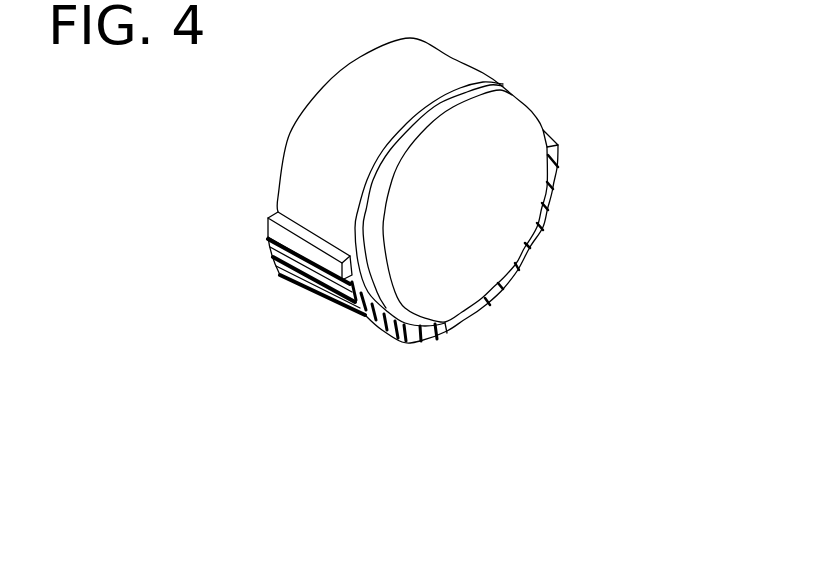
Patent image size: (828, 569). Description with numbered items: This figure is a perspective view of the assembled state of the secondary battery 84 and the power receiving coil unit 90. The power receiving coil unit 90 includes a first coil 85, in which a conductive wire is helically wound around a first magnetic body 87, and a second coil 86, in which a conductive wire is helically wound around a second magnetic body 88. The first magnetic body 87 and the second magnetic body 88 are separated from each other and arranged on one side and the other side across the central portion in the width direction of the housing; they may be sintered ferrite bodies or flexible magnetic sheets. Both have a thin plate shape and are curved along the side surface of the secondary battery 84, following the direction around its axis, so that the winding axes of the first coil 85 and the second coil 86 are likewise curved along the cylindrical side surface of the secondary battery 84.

The secondary battery 84 is at (483, 78).
The first coil 85 is at (440, 333).
The second coil 86 is at (538, 228).
The first magnetic body 87 is at (412, 333).
The second magnetic body 88 is at (548, 192).
The power receiving coil unit 90 is at (636, 373).